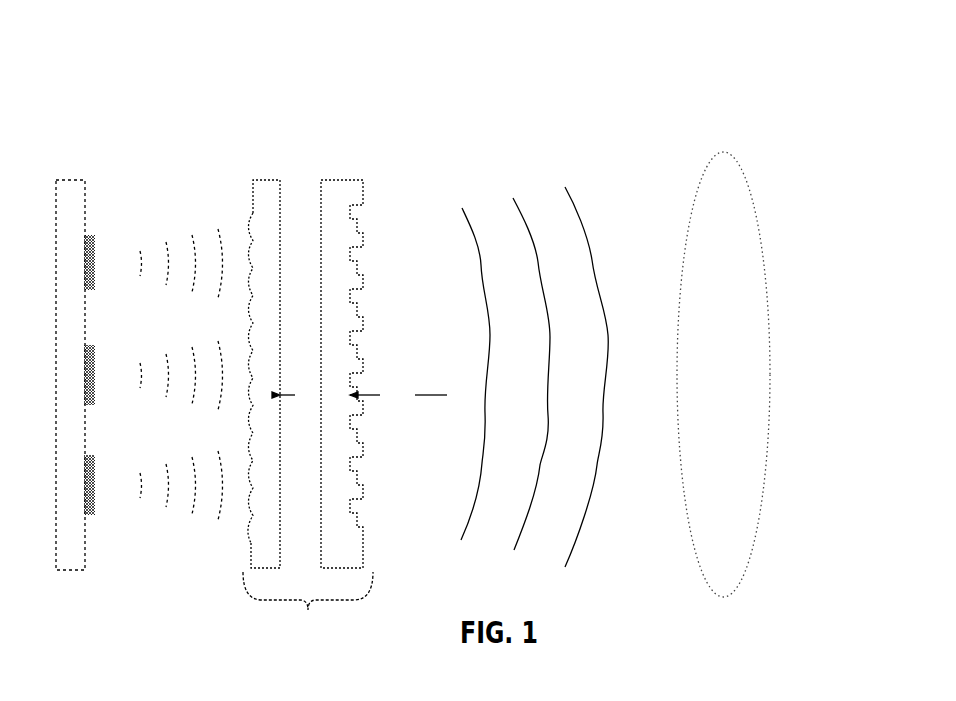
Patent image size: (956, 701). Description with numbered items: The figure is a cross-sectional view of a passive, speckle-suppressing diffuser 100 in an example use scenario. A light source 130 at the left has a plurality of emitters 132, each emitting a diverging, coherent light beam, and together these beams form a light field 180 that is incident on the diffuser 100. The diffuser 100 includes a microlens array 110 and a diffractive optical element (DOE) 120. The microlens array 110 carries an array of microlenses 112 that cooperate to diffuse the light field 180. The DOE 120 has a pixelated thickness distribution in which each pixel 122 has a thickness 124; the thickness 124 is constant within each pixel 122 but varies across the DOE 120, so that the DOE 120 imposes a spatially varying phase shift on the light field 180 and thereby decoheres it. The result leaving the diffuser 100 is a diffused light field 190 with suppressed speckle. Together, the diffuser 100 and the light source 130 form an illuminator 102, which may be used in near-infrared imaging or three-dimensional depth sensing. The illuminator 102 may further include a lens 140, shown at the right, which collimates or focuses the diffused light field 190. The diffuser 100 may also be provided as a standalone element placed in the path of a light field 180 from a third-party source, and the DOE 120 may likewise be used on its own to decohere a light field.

The passive, speckle-suppressing diffuser 100 is at (308, 607).
The illuminator 102 is at (90, 62).
The microlens array 110 is at (251, 338).
The microlenses 112 is at (247, 215).
The diffractive optical element (DOE) 120 is at (359, 338).
The pixel 122 is at (362, 258).
The thickness 124 is at (359, 396).
The light source 130 is at (74, 180).
The emitters 132 is at (93, 494).
The lens 140 is at (732, 152).
The light field 180 is at (164, 353).
The diffused light field 190 is at (514, 166).